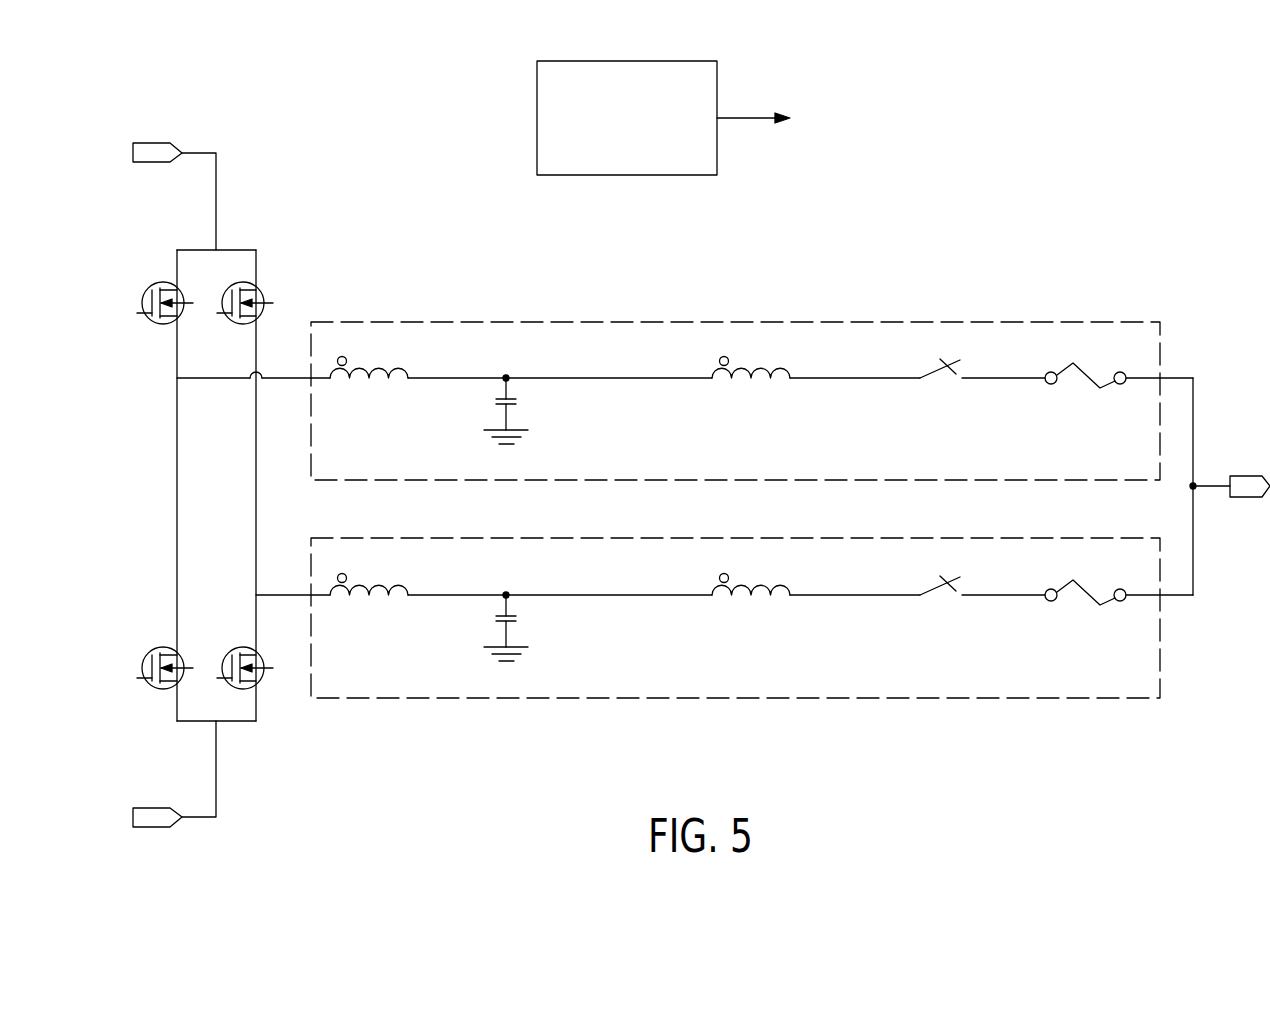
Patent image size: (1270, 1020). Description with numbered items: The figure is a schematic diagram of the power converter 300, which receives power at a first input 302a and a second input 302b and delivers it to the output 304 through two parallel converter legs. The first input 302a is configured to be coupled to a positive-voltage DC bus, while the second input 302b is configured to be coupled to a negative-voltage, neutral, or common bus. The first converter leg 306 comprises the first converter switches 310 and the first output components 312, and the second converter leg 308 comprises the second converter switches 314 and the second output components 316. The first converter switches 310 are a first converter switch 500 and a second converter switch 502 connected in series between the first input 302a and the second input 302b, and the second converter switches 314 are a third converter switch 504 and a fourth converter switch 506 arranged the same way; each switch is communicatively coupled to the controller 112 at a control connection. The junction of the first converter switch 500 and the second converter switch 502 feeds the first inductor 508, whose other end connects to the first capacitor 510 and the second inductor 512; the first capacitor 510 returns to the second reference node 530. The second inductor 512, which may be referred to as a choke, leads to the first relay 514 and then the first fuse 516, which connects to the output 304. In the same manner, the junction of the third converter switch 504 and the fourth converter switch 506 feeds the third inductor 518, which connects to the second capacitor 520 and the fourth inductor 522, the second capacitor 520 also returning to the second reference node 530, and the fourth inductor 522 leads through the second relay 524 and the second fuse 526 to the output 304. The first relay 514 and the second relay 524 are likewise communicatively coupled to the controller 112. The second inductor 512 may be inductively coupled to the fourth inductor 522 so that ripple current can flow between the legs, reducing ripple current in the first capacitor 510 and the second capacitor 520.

The controller 112 is at (717, 85).
The power converter 300 is at (1162, 162).
The first input 302a is at (152, 143).
The second input 302b is at (153, 827).
The output 304 is at (1250, 475).
The first converter leg 306 is at (1196, 342).
The second converter leg 308 is at (1196, 618).
The first converter switches 310 is at (155, 715).
The second converter switches 314 is at (242, 745).
The first output components 312 is at (857, 322).
The second output components 316 is at (864, 700).
The first converter switch 500 is at (147, 292).
The second converter switch 502 is at (179, 650).
The third converter switch 504 is at (266, 300).
The fourth converter switch 506 is at (264, 677).
The first inductor 508 is at (370, 382).
The first capacitor 510 is at (495, 394).
The second inductor 512 is at (757, 384).
The first relay 514 is at (953, 390).
The first fuse 516 is at (1100, 390).
The third inductor 518 is at (370, 599).
The second capacitor 520 is at (495, 611).
The fourth inductor 522 is at (757, 601).
The second relay 524 is at (953, 607).
The second fuse 526 is at (1100, 607).
The second reference node 530 is at (525, 430).